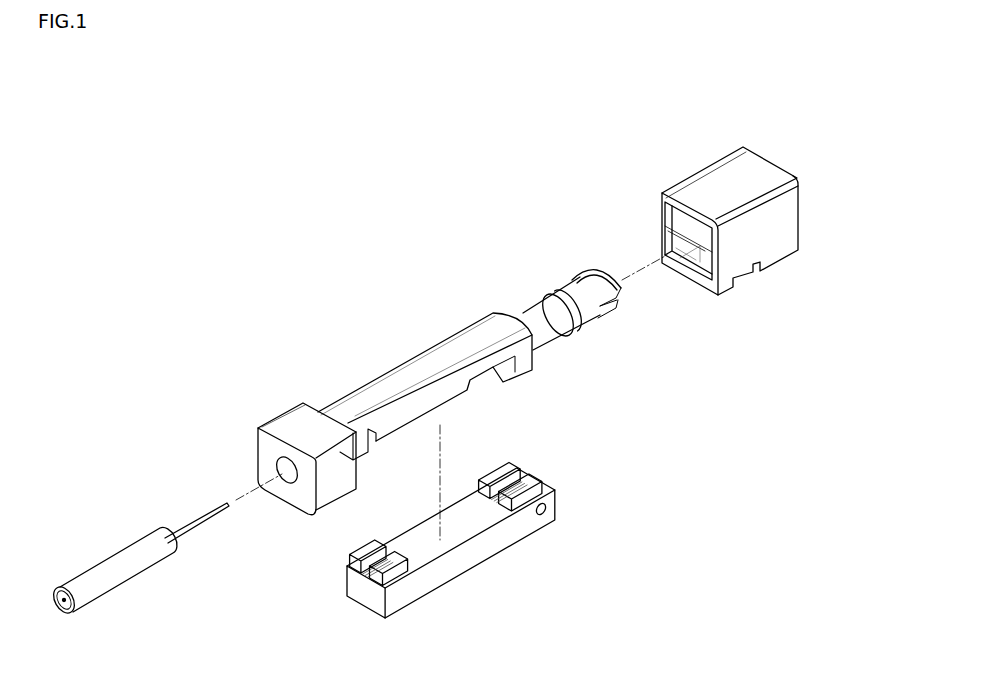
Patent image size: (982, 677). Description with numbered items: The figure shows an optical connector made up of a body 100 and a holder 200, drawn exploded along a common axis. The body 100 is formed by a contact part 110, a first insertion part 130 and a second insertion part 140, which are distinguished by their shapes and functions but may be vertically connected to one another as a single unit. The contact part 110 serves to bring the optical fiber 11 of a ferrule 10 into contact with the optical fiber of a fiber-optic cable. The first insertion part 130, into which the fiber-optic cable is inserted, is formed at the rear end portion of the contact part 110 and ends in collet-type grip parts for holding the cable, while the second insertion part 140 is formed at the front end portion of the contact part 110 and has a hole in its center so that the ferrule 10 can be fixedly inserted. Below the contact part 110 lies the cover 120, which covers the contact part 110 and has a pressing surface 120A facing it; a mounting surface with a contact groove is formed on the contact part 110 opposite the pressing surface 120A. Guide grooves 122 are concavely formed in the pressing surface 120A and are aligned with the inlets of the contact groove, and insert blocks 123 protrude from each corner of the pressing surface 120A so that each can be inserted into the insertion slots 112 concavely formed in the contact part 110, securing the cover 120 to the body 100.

The ferrule 10 is at (139, 539).
The optical fiber 11 is at (198, 518).
The body 100 is at (340, 232).
The contact part 110 is at (413, 371).
The insertion slots 112 is at (455, 340).
The cover 120 is at (451, 539).
The pressing surface 120A is at (420, 552).
The guide grooves 122 is at (523, 487).
The insert blocks 123 is at (505, 477).
The first insertion part 130 is at (530, 308).
The second insertion part 140 is at (295, 425).
The holder 200 is at (689, 135).